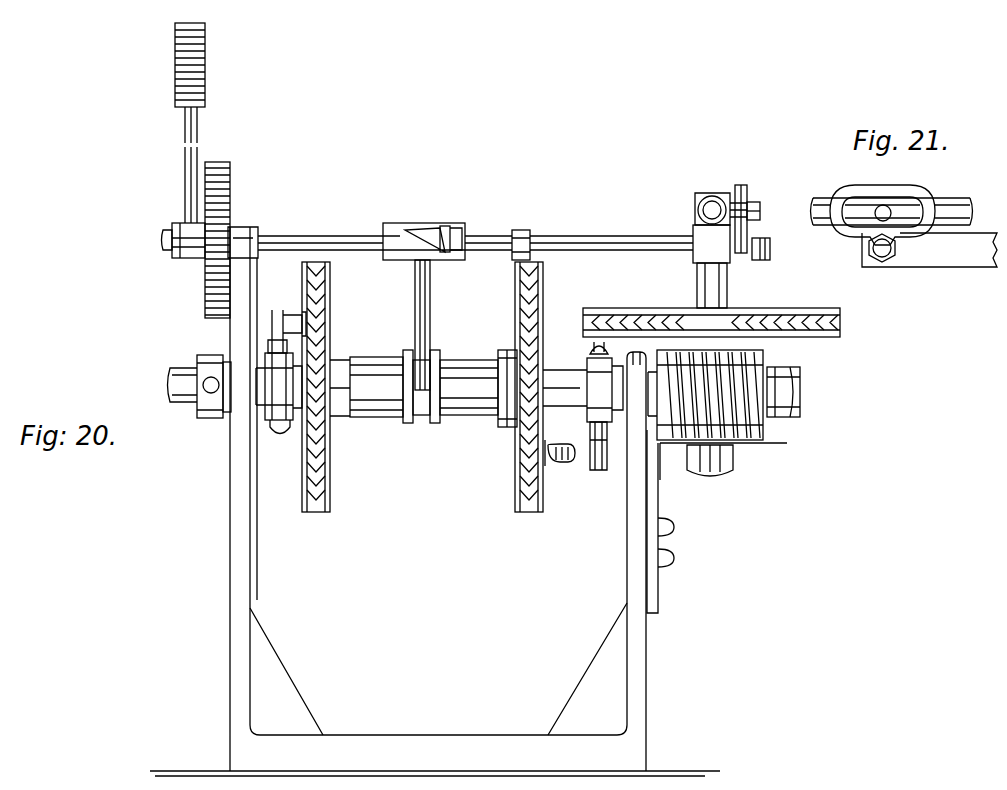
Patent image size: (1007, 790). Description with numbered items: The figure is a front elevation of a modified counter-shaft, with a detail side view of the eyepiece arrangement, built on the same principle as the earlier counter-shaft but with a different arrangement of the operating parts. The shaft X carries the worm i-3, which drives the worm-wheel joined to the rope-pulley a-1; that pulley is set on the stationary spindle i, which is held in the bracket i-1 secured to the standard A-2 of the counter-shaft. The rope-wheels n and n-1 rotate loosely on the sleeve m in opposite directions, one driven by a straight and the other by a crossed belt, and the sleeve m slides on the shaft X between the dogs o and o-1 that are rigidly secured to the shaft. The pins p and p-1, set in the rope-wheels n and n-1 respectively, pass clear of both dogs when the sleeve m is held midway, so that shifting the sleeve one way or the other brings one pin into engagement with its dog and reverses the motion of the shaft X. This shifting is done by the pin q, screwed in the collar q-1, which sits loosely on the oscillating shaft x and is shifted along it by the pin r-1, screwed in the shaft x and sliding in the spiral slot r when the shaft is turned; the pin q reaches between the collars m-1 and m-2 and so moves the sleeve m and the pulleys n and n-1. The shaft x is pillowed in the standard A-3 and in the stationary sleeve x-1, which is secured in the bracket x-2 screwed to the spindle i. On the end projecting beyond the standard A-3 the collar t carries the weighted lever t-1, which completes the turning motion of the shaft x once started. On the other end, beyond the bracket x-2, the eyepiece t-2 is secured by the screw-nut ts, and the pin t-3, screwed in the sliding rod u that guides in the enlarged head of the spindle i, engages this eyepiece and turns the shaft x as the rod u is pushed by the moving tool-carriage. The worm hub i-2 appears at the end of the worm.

In FIG. 20, the weighted lever t-1 is at (206, 123).
In FIG. 20, the collar t is at (190, 252).
In FIG. 20, the oscillating shaft x is at (162, 240).
In FIG. 20, the stationary sleeve x-1 is at (596, 234).
In FIG. 20, the bracket x-2 is at (711, 244).
In FIG. 21, the bracket x-2 is at (862, 256).
In FIG. 20, the shaft X is at (172, 370).
In FIG. 20, the spiral slot r is at (410, 230).
In FIG. 20, the pin r-1 is at (447, 228).
In FIG. 20, the collar q-1 is at (464, 234).
In FIG. 20, the pin q is at (430, 312).
In FIG. 20, the pin p-1 is at (278, 318).
In FIG. 20, the pin p is at (562, 443).
In FIG. 20, the dog o is at (278, 433).
In FIG. 20, the dog o-1 is at (600, 380).
In FIG. 20, the rope-wheel n is at (318, 514).
In FIG. 20, the rope-wheel n-1 is at (545, 509).
In FIG. 20, the sleeve m is at (462, 412).
In FIG. 20, the collar m-1 is at (441, 354).
In FIG. 20, the collar m-2 is at (405, 354).
In FIG. 20, the sliding rod u is at (716, 204).
In FIG. 21, the sliding rod u is at (946, 200).
In FIG. 20, the eyepiece t-2 is at (742, 186).
In FIG. 21, the eyepiece t-2 is at (848, 193).
In FIG. 20, the pin t-3 is at (761, 210).
In FIG. 21, the pin t-3 is at (890, 200).
In FIG. 20, the screw-nut ts is at (763, 254).
In FIG. 21, the screw-nut ts is at (886, 262).
In FIG. 20, the stationary spindle i is at (728, 290).
In FIG. 20, the bracket i-1 is at (659, 508).
In FIG. 20, the worm hub i-2 is at (801, 395).
In FIG. 20, the worm i-3 is at (757, 425).
In FIG. 20, the rope-pulley a-1 is at (841, 331).
In FIG. 20, the standard A-2 is at (645, 663).
In FIG. 20, the standard A-3 is at (235, 571).